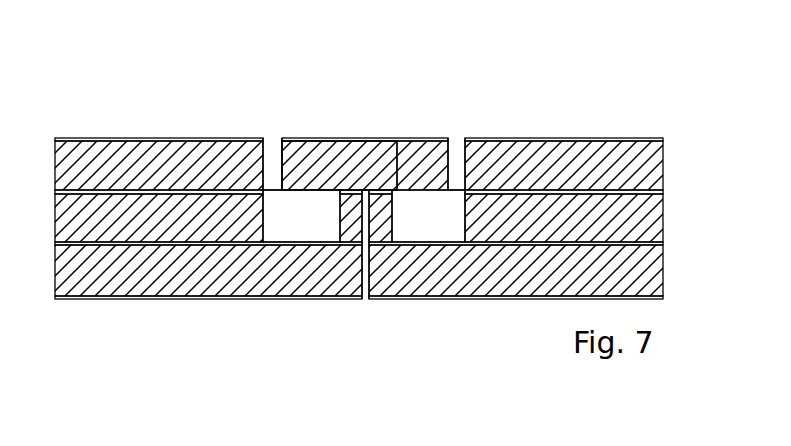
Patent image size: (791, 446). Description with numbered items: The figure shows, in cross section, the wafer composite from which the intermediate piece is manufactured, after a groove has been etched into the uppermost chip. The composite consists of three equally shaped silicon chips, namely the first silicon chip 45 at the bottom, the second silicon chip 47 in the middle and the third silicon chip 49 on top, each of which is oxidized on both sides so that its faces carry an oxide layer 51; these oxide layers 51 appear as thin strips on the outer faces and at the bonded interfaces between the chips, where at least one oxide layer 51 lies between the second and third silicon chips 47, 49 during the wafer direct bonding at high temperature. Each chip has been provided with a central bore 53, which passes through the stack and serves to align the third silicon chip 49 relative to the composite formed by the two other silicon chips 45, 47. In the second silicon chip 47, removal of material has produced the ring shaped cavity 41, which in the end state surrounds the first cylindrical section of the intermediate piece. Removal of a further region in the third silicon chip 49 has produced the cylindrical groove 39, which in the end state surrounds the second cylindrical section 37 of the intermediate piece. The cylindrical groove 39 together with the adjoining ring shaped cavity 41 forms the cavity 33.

The cavity 33 is at (397, 208).
The second cylindrical section 37 is at (342, 157).
The cylindrical groove 39 is at (276, 157).
The ring shaped cavity 41 is at (312, 225).
The first silicon chip 45 is at (641, 278).
The second silicon chip 47 is at (641, 220).
The third silicon chip 49 is at (641, 164).
The oxide layer 51 is at (501, 190).
The central bore 53 is at (365, 300).